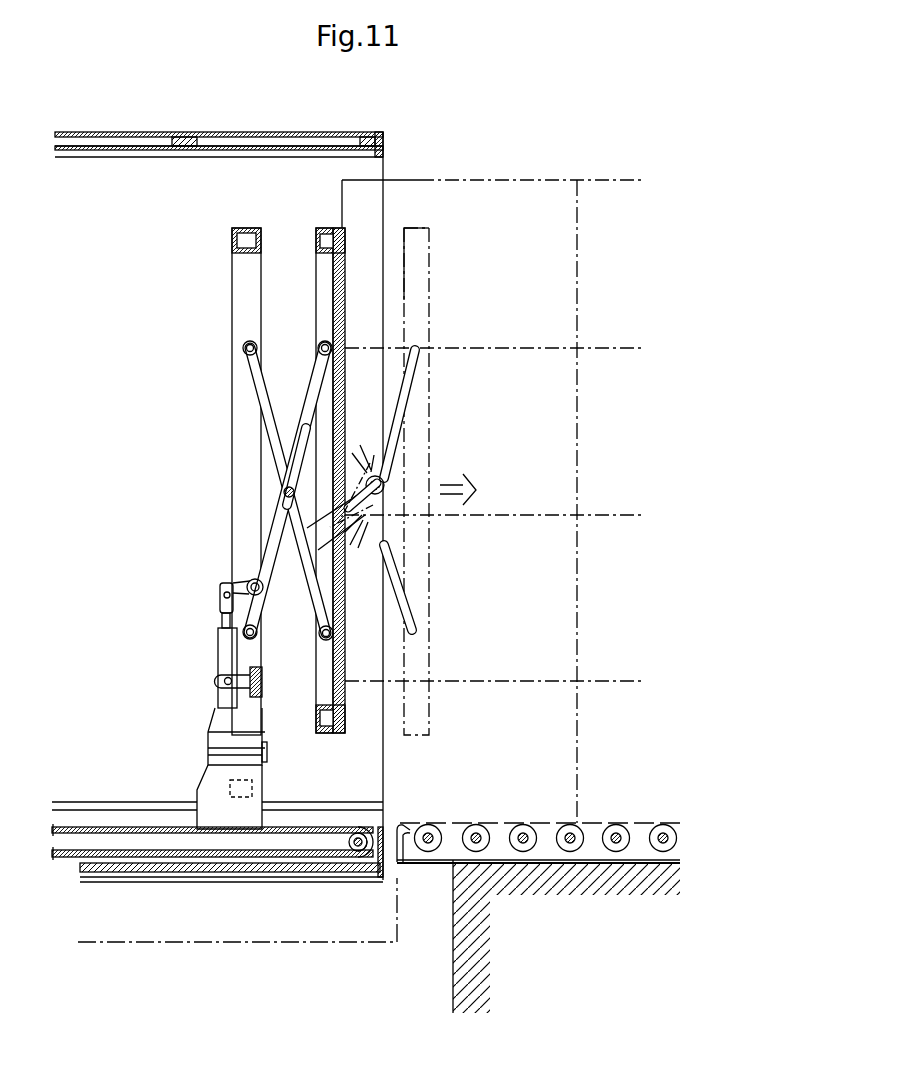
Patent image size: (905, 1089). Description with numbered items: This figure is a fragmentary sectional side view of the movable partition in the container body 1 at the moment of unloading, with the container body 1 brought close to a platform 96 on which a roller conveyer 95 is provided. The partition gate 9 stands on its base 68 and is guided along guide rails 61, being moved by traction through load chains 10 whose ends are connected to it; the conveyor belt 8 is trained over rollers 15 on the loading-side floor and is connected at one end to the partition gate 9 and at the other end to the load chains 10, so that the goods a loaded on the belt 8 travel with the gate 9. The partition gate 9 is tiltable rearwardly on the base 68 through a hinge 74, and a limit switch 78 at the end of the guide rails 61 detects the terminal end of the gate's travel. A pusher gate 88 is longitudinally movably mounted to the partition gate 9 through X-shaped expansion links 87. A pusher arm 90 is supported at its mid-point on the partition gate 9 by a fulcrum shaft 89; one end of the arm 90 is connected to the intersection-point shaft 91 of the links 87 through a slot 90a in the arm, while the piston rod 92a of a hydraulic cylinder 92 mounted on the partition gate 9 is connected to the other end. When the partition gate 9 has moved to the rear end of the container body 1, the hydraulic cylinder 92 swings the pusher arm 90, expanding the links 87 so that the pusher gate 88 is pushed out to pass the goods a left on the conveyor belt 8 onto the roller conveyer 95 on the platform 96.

The container body 1 is at (130, 132).
The goods a is at (600, 180).
The partition gate 9 is at (232, 275).
The pusher gate 88 is at (318, 230).
The X-shaped expansion links 87 is at (308, 392).
The pusher arm 90 is at (267, 544).
The slot 90a is at (297, 452).
The intersection-point shaft 91 is at (287, 493).
The fulcrum shaft 89 is at (245, 578).
The hydraulic cylinder 92 is at (218, 662).
The piston rod 92a is at (220, 597).
The limit switch 78 is at (228, 780).
The hinge 74 is at (270, 750).
The base 68 is at (202, 786).
The guide rails 61 is at (73, 802).
The load chains 10 is at (135, 852).
The rollers 15 is at (293, 873).
The conveyor belt 8 is at (363, 855).
The roller conveyer 95 is at (660, 823).
The platform 96 is at (455, 932).